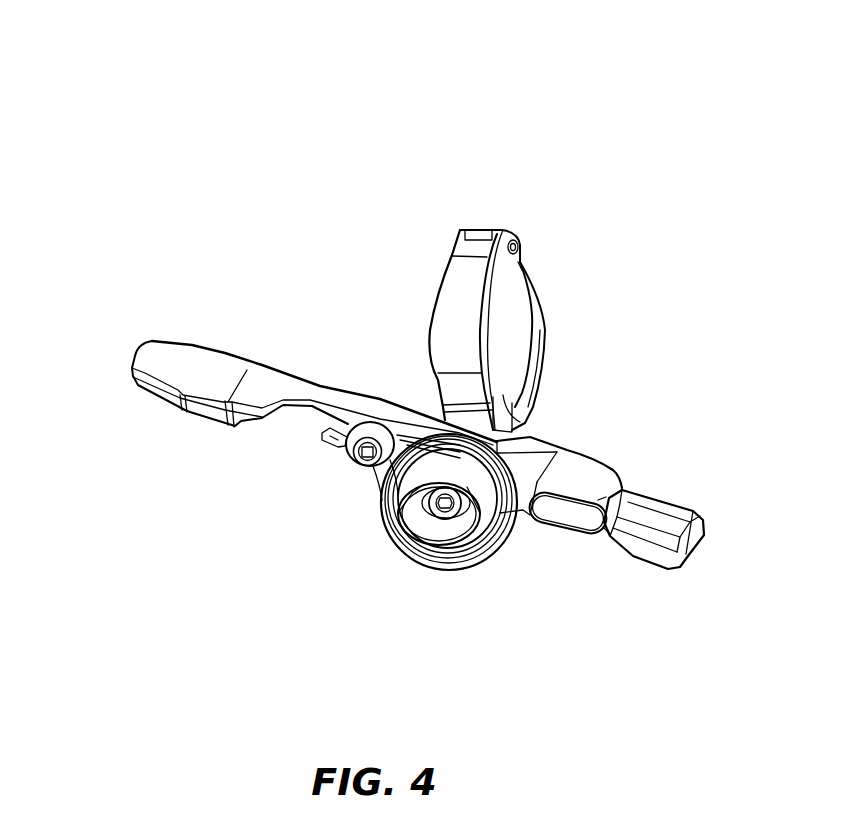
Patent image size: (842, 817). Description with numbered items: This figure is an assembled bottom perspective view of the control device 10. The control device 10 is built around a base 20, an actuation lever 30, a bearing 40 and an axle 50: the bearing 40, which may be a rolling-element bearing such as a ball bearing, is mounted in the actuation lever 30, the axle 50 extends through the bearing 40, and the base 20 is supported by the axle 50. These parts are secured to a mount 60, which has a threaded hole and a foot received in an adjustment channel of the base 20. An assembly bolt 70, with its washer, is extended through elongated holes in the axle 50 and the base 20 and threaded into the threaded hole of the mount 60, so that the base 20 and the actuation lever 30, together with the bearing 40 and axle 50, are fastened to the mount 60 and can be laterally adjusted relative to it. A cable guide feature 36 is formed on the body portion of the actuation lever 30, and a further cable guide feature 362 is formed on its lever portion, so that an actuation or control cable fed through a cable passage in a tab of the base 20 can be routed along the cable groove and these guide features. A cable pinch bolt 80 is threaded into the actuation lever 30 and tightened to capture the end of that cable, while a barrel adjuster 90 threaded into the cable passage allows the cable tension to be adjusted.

The control device 10 is at (689, 90).
The base 20 is at (587, 433).
The actuation lever 30 is at (238, 473).
The cable guide feature 36 is at (394, 466).
The bearing 40 is at (495, 538).
The axle 50 is at (423, 543).
The mount 60 is at (577, 252).
The assembly bolt 70 is at (447, 517).
The cable pinch bolt 80 is at (361, 460).
The barrel adjuster 90 is at (682, 468).
The cable guide feature 362 is at (337, 440).